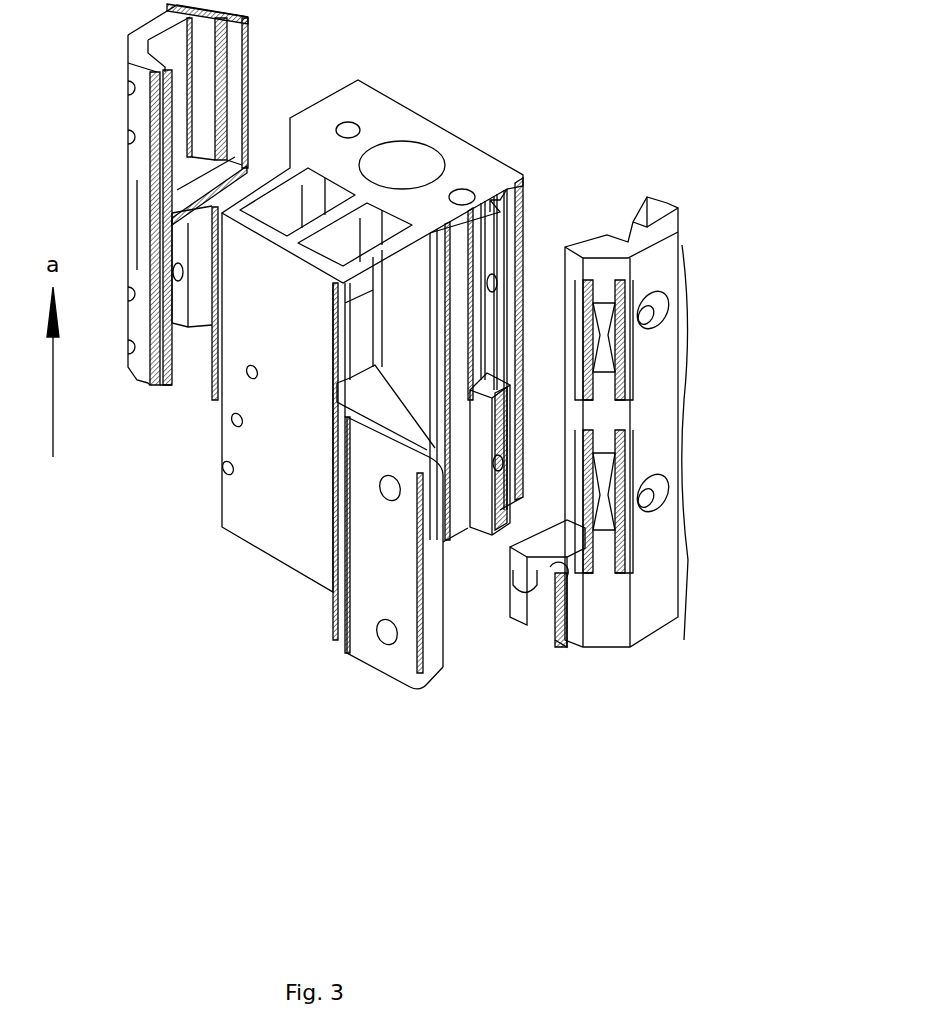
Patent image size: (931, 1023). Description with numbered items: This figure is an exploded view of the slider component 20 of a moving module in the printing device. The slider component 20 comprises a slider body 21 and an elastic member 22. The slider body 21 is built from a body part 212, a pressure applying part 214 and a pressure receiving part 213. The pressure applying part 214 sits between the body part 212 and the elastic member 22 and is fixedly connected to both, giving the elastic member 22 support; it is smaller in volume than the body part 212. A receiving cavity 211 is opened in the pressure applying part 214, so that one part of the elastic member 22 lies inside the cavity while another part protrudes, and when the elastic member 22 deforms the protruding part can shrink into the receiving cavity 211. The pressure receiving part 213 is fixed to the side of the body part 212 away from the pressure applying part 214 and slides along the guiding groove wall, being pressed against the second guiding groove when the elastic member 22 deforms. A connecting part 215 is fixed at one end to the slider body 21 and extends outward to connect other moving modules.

The slider component 20 is at (562, 850).
The slider body 21 is at (530, 768).
The elastic member 22 is at (607, 497).
The receiving cavity 211 is at (655, 541).
The body part 212 is at (303, 510).
The pressure receiving part 213 is at (147, 365).
The pressure applying part 214 is at (550, 577).
The connecting part 215 is at (383, 543).